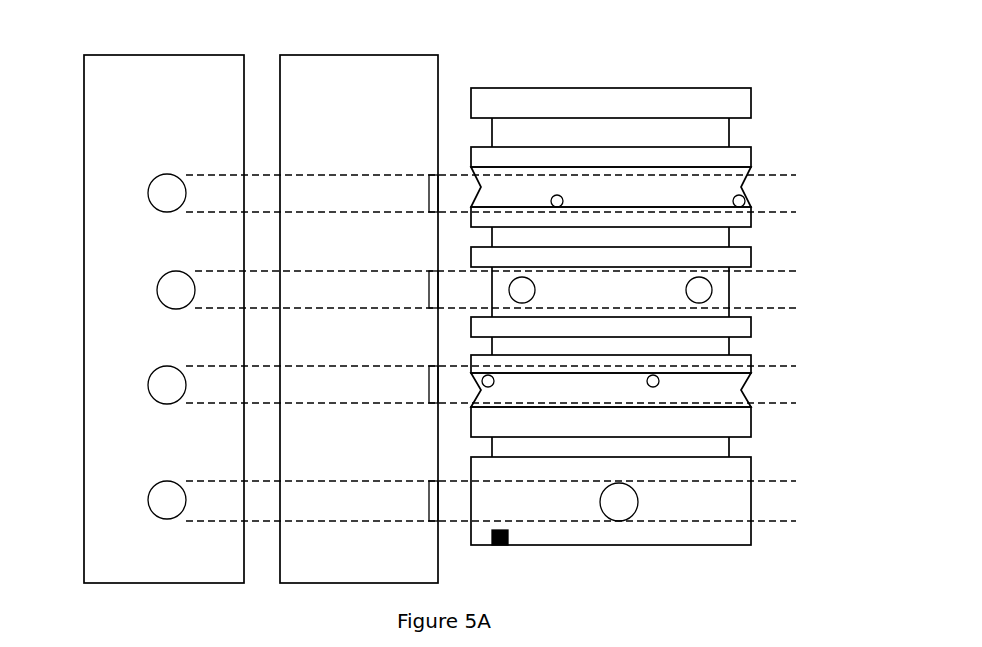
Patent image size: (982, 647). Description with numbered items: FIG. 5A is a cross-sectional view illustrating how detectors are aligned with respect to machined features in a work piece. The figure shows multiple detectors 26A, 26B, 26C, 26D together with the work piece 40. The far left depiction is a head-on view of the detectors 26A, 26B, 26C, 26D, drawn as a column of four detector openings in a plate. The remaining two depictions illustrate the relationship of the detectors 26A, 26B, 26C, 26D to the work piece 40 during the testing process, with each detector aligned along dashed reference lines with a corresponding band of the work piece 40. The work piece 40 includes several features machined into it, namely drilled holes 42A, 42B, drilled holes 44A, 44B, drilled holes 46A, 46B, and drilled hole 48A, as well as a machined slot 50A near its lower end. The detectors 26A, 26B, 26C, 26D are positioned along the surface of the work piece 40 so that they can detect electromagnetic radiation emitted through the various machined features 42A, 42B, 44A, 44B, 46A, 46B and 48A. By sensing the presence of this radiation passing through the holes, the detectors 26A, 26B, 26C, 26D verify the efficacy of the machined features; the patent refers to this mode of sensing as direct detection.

The detector 26A is at (160, 187).
The detector 26B is at (162, 290).
The detector 26C is at (162, 384).
The detector 26D is at (162, 493).
The work piece 40 is at (641, 54).
The drilled hole 42A is at (563, 202).
The drilled hole 42B is at (747, 200).
The drilled hole 44A is at (524, 290).
The drilled hole 44B is at (705, 290).
The drilled hole 46A is at (491, 382).
The drilled hole 46B is at (657, 378).
The drilled hole 48A is at (623, 502).
The machined slot 50A is at (498, 546).